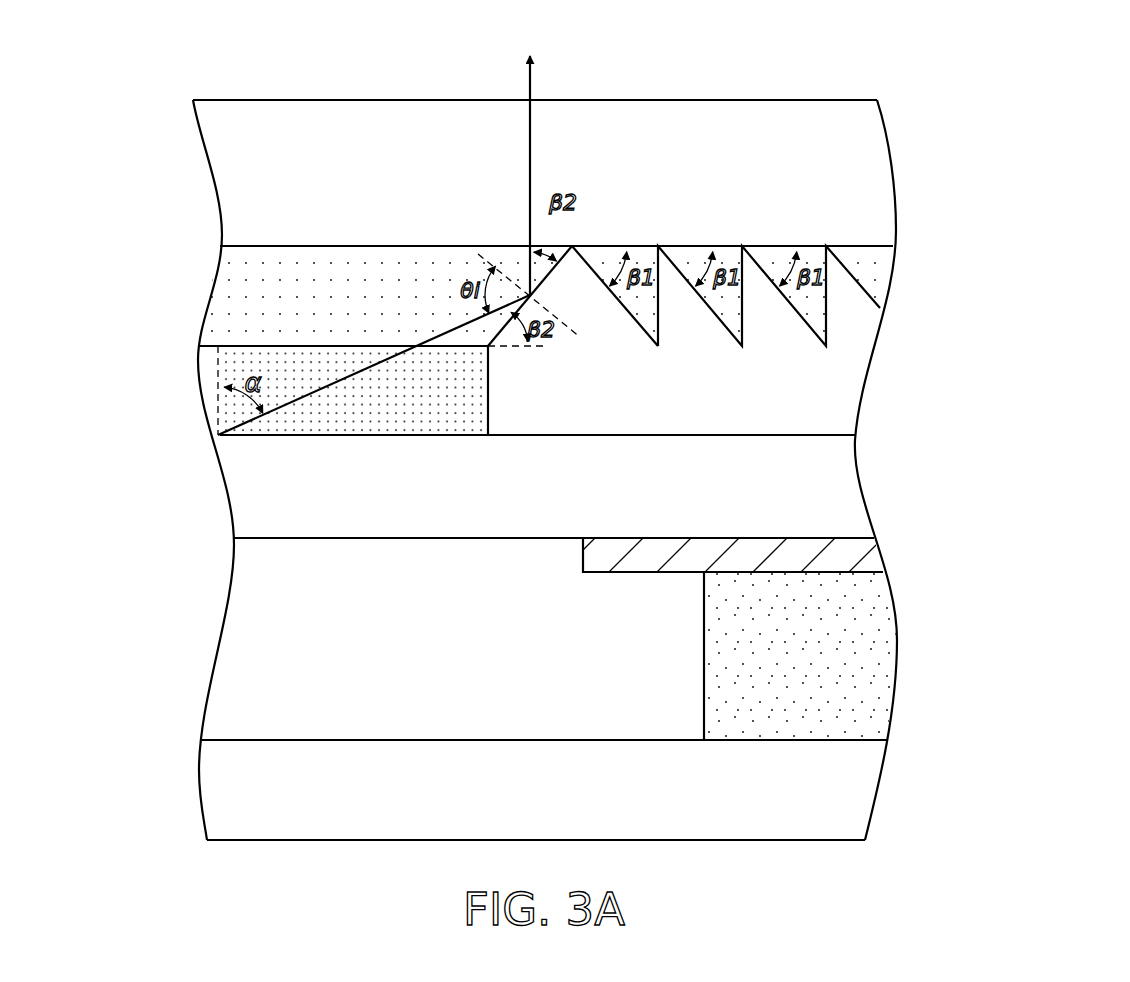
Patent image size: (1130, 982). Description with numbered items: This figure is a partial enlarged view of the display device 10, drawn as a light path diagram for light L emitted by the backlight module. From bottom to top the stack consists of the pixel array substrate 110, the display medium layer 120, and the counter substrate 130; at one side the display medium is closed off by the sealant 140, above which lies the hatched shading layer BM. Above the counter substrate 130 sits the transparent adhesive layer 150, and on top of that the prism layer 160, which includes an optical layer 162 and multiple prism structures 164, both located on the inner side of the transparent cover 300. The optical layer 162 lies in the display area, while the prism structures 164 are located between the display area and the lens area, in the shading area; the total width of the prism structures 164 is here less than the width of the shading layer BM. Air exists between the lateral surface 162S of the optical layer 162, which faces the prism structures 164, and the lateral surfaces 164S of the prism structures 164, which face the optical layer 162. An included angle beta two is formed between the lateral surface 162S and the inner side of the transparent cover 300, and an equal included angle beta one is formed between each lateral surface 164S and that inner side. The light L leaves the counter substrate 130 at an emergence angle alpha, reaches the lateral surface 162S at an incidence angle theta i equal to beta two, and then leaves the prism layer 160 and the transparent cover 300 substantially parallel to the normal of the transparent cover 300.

The display device 10 is at (933, 864).
The pixel array substrate 110 is at (218, 777).
The display medium layer 120 is at (222, 633).
The counter substrate 130 is at (250, 480).
The sealant 140 is at (855, 643).
The transparent adhesive layer 150 is at (207, 385).
The prism layer 160 is at (1068, 55).
The optical layer 162 is at (222, 293).
The prism structures 164 is at (815, 303).
The lateral surface of the optical layer 162S is at (549, 282).
The lateral surfaces of the prism structures 164S is at (622, 309).
The transparent cover 300 is at (830, 176).
The shading layer BM is at (848, 553).
The light L is at (530, 148).